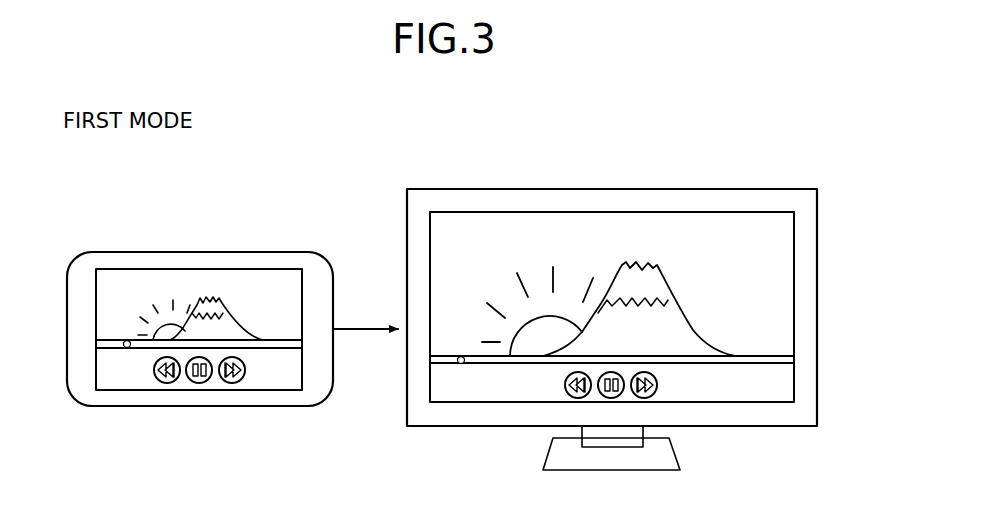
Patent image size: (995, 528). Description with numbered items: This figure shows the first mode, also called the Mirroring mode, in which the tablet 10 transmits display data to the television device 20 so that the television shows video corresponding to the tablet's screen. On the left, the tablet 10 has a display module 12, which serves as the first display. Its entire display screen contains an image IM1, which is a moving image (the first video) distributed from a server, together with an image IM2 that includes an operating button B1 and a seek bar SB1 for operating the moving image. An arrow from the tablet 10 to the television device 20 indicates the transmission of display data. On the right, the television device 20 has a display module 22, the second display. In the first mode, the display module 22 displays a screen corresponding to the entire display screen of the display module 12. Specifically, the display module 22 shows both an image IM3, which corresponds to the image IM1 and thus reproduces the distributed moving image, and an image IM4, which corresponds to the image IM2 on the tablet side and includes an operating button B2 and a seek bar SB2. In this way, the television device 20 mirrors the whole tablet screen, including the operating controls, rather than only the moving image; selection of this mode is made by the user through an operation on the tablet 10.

The tablet 10 is at (257, 252).
The display module 12 is at (122, 276).
The television device 20 is at (770, 189).
The display module 22 is at (476, 222).
The image IM1 is at (110, 309).
The image IM2 is at (110, 380).
The image IM3 is at (780, 309).
The image IM4 is at (780, 380).
The seek bar SB1 is at (144, 352).
The seek bar SB2 is at (487, 367).
The operating button B1 is at (166, 385).
The operating button B2 is at (579, 401).